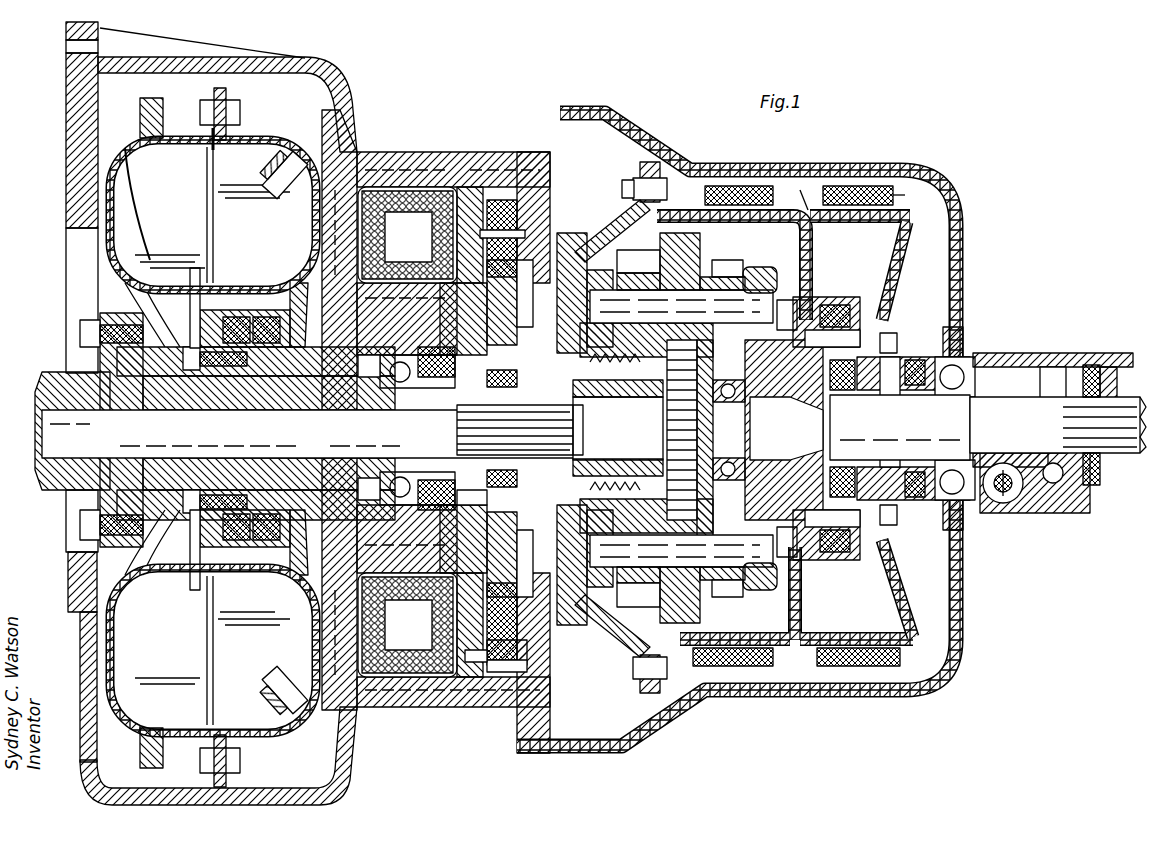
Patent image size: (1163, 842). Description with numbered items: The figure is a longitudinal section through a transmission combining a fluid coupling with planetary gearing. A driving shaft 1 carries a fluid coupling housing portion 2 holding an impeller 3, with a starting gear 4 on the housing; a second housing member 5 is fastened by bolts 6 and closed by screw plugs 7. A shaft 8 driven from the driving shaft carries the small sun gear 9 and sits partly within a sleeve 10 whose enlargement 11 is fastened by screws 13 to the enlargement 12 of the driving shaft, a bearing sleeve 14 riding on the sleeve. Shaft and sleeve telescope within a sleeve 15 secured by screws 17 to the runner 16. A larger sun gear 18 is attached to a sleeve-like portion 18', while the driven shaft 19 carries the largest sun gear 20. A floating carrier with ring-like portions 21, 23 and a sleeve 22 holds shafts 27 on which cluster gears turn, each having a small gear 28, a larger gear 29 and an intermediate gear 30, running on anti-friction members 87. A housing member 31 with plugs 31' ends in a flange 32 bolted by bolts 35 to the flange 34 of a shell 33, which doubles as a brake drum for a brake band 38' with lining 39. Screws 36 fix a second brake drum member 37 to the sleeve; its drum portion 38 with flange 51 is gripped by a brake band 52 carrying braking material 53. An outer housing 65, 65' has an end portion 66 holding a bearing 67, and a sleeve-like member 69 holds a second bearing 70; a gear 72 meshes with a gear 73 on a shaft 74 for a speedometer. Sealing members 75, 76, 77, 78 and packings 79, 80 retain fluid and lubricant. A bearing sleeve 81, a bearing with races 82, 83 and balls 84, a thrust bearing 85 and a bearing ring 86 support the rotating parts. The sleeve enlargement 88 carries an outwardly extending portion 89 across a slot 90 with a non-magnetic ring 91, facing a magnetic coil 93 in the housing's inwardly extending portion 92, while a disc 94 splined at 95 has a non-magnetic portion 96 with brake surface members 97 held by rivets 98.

The driving shaft 1 is at (40, 383).
The fluid coupling housing portion 2 is at (108, 245).
The impeller 3 is at (140, 170).
The gear 4 is at (140, 112).
The second fluid coupling housing member 5 is at (222, 142).
The bolts 6 is at (228, 110).
The screw plugs 7 is at (288, 155).
The shaft 8 is at (643, 428).
The small sun gear 9 is at (667, 416).
The sleeve 10 is at (310, 460).
The enlargement 11 is at (140, 500).
The enlargement 12 is at (84, 355).
The screws 13 is at (85, 328).
The bearing sleeve 14 is at (250, 385).
The sleeve 15 is at (245, 545).
The runner 16 is at (295, 238).
The screws 17 is at (192, 330).
The larger sun gear 18 is at (560, 427).
The sleeve-like portion 18' is at (517, 428).
The driven shaft 19 is at (905, 437).
The sun gear 20 is at (768, 390).
The ring-like portion 21 is at (758, 290).
The sleeve 22 is at (828, 330).
The ring-like portion 23 is at (601, 419).
The shafts 27 is at (775, 290).
The small gear 28 is at (728, 262).
The larger gear 29 is at (688, 248).
The intermediately sized gear 30 is at (636, 262).
The housing member 31 is at (603, 412).
The plugs 31' is at (612, 429).
The flange 32 is at (642, 182).
The housing or shell 33 is at (778, 212).
The flange 34 is at (648, 168).
The bolts 35 is at (624, 186).
The screws 36 is at (888, 340).
The second brake drum member 37 is at (900, 270).
The drum-like portion 38 is at (852, 243).
The brake band 38' is at (739, 167).
The brake lining 39 is at (748, 186).
The flange 51 is at (808, 206).
The brake band 52 is at (855, 186).
The braking material 53 is at (913, 193).
The housing 65 is at (308, 413).
The housing 65' is at (682, 728).
The end portion 66 is at (964, 565).
The anti-friction bearing 67 is at (965, 355).
The sleeve-like member 69 is at (1045, 352).
The second anti-friction bearing 70 is at (1060, 370).
The gear 72 is at (1000, 366).
The gear 73 is at (1025, 490).
The shaft 74 is at (1000, 490).
The sealing members 75 is at (245, 548).
The sealing and packing members 76 is at (450, 360).
The sealing and packing members 77 is at (840, 310).
The sealing and packing members 78 is at (845, 385).
The packing 79 is at (915, 388).
The packing 80 is at (1100, 380).
The bearing sleeve 81 is at (587, 430).
The race 82 is at (400, 400).
The race 83 is at (369, 489).
The balls 84 is at (369, 366).
The combined thrust and anti-friction bearing 85 is at (726, 400).
The bearing ring 86 is at (826, 420).
The anti-friction members 87 is at (681, 428).
The enlargement 88 is at (470, 560).
The outwardly extending portion 89 is at (530, 650).
The slot 90 is at (530, 668).
The ring 91 is at (473, 670).
The inwardly extending portion 92 is at (300, 580).
The magnetic coil 93 is at (405, 665).
The disc 94 is at (505, 540).
The spline 95 is at (472, 501).
The non-magnetic portion 96 is at (480, 215).
The brake surface member 97 is at (490, 222).
The rivets 98 is at (482, 236).